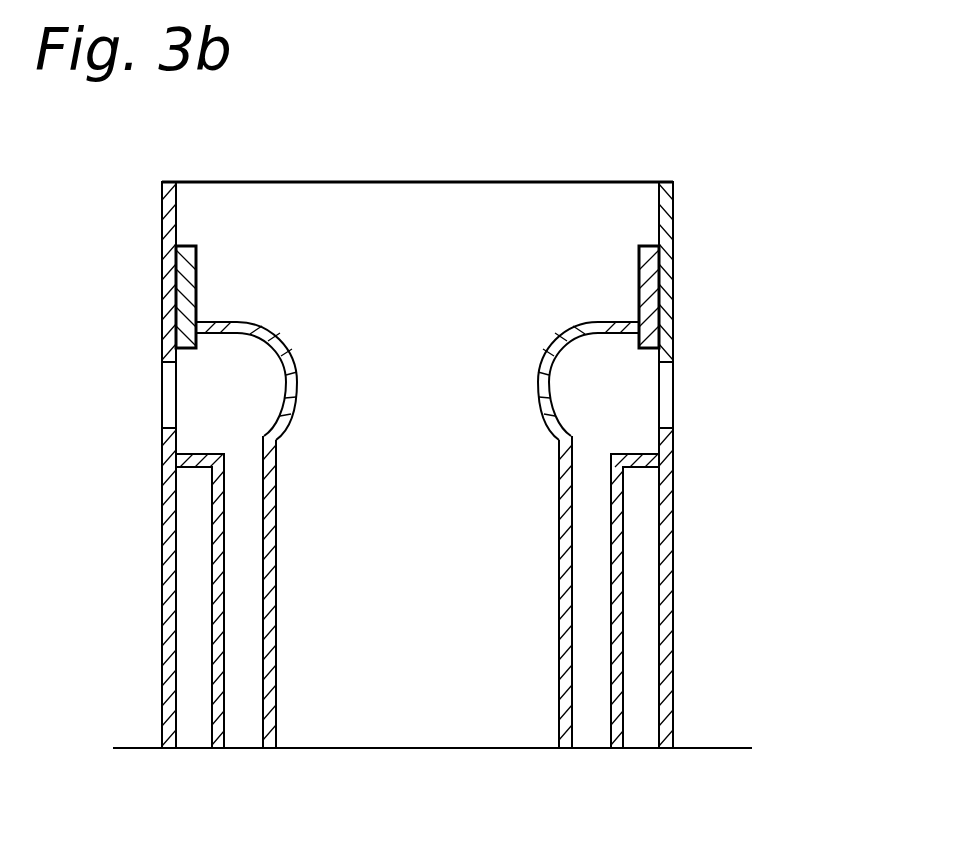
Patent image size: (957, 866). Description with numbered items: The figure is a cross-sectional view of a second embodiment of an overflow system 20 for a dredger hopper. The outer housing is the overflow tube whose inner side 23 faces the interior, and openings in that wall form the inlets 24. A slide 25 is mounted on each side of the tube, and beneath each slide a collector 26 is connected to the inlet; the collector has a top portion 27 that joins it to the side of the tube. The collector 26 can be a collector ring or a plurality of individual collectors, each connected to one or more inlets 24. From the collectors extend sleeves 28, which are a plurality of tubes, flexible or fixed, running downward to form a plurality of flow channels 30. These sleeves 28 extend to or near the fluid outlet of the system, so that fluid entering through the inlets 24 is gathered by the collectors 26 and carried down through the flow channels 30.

The overflow system 20 is at (528, 146).
The inner side 23 is at (172, 665).
The inlets 24 is at (152, 400).
The slide 25 is at (187, 285).
The collector 26 is at (541, 411).
The top portion 27 is at (230, 328).
The sleeves 28 is at (568, 535).
The flow channels 30 is at (597, 607).